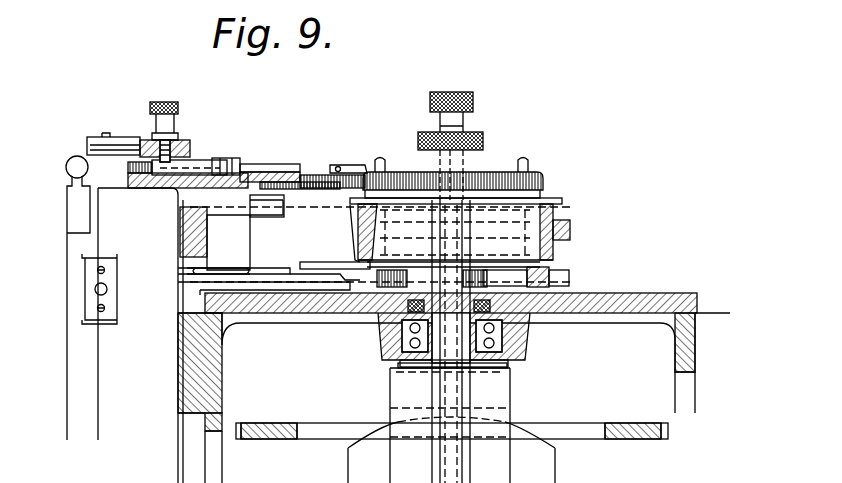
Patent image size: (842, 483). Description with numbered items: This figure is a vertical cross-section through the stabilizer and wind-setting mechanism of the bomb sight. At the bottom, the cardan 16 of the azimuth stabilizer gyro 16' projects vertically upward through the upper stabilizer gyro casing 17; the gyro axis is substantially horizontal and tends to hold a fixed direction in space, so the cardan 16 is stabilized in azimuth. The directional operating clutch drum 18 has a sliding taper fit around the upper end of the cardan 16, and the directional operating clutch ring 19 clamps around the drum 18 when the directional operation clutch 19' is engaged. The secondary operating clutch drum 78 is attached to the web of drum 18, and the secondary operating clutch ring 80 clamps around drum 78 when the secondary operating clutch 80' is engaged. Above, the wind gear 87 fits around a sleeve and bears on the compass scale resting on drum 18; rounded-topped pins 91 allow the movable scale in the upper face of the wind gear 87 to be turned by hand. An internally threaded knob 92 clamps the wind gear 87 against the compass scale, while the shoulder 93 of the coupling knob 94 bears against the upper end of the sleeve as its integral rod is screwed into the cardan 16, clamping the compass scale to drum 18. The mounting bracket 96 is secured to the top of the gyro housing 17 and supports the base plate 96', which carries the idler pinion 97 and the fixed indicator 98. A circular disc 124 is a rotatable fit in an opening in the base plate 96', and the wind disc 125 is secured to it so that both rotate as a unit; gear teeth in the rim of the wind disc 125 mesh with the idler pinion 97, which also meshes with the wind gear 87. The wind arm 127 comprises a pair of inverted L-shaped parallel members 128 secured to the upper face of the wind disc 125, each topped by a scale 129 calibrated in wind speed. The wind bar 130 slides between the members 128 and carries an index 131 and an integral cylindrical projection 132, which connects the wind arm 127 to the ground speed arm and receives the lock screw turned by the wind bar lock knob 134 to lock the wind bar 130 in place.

The cardan 16 is at (450, 423).
The azimuth stabilizer gyro 16' is at (451, 450).
The upper stabilizer gyro casing 17 is at (318, 377).
The directional operating clutch drum 18 is at (409, 238).
The directional operating clutch ring 19 is at (339, 233).
The directional operation clutch 19' is at (582, 229).
The secondary operating clutch drum 78 is at (510, 285).
The secondary operating clutch ring 80 is at (579, 276).
The secondary operating clutch 80' is at (569, 267).
The wind gear 87 is at (545, 186).
The rounded-topped pins 91 is at (380, 157).
The knob 92 is at (485, 138).
The shoulder 93 is at (464, 123).
The coupling knob 94 is at (444, 92).
The mounting bracket 96 is at (215, 238).
The base plate 96' is at (280, 212).
The idler pinion 97 is at (322, 172).
The fixed indicator 98 is at (348, 166).
The circular disc 124 is at (252, 203).
The wind disc 125 is at (147, 190).
The wind arm 127 is at (272, 153).
The inverted L-shaped parallel members 128 is at (306, 178).
The scale 129 is at (260, 170).
The wind bar 130 is at (200, 163).
The index 131 is at (226, 172).
The cylindrical projection 132 is at (152, 143).
The wind bar lock knob 134 is at (165, 100).